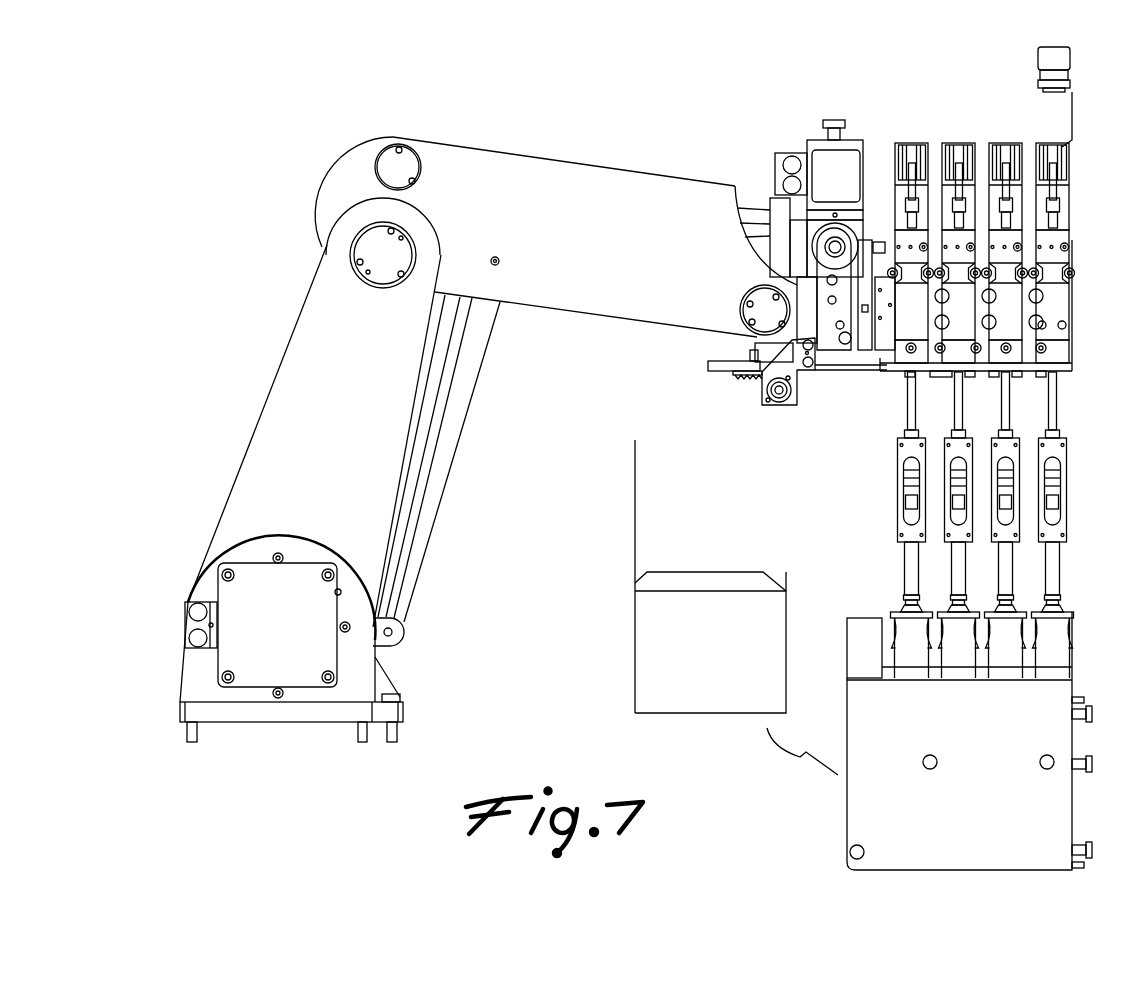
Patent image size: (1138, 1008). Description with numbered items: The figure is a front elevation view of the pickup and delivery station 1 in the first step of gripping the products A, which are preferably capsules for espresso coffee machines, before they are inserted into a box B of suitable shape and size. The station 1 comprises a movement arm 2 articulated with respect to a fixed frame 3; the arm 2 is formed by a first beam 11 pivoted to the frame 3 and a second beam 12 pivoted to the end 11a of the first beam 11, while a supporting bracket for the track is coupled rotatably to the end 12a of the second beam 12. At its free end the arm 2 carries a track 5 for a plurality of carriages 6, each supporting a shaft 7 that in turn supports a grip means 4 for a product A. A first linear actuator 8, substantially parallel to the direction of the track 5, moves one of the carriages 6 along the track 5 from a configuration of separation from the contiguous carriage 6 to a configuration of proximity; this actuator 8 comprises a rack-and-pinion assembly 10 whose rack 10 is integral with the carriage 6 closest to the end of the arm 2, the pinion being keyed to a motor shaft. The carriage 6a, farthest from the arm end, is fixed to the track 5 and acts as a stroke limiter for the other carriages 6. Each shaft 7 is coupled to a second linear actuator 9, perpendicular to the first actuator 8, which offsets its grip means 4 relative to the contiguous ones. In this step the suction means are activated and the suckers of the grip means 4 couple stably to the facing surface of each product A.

The pickup and delivery station 1 is at (192, 178).
The movement arm 2 is at (226, 419).
The fixed frame 3 is at (218, 712).
The grip means 4 is at (953, 598).
The track 5 is at (887, 297).
The carriage 6 is at (970, 250).
The carriage 6a is at (1057, 363).
The shaft 7 is at (954, 408).
The first linear actuator 8 is at (750, 406).
The second linear actuator 9 is at (908, 145).
The rack-and-pinion assembly 10 is at (740, 381).
The first beam 11 is at (313, 378).
The end of the first beam 11a is at (343, 233).
The second beam 12 is at (552, 188).
The end of the second beam 12a is at (748, 278).
The product A is at (893, 617).
The box B is at (652, 657).